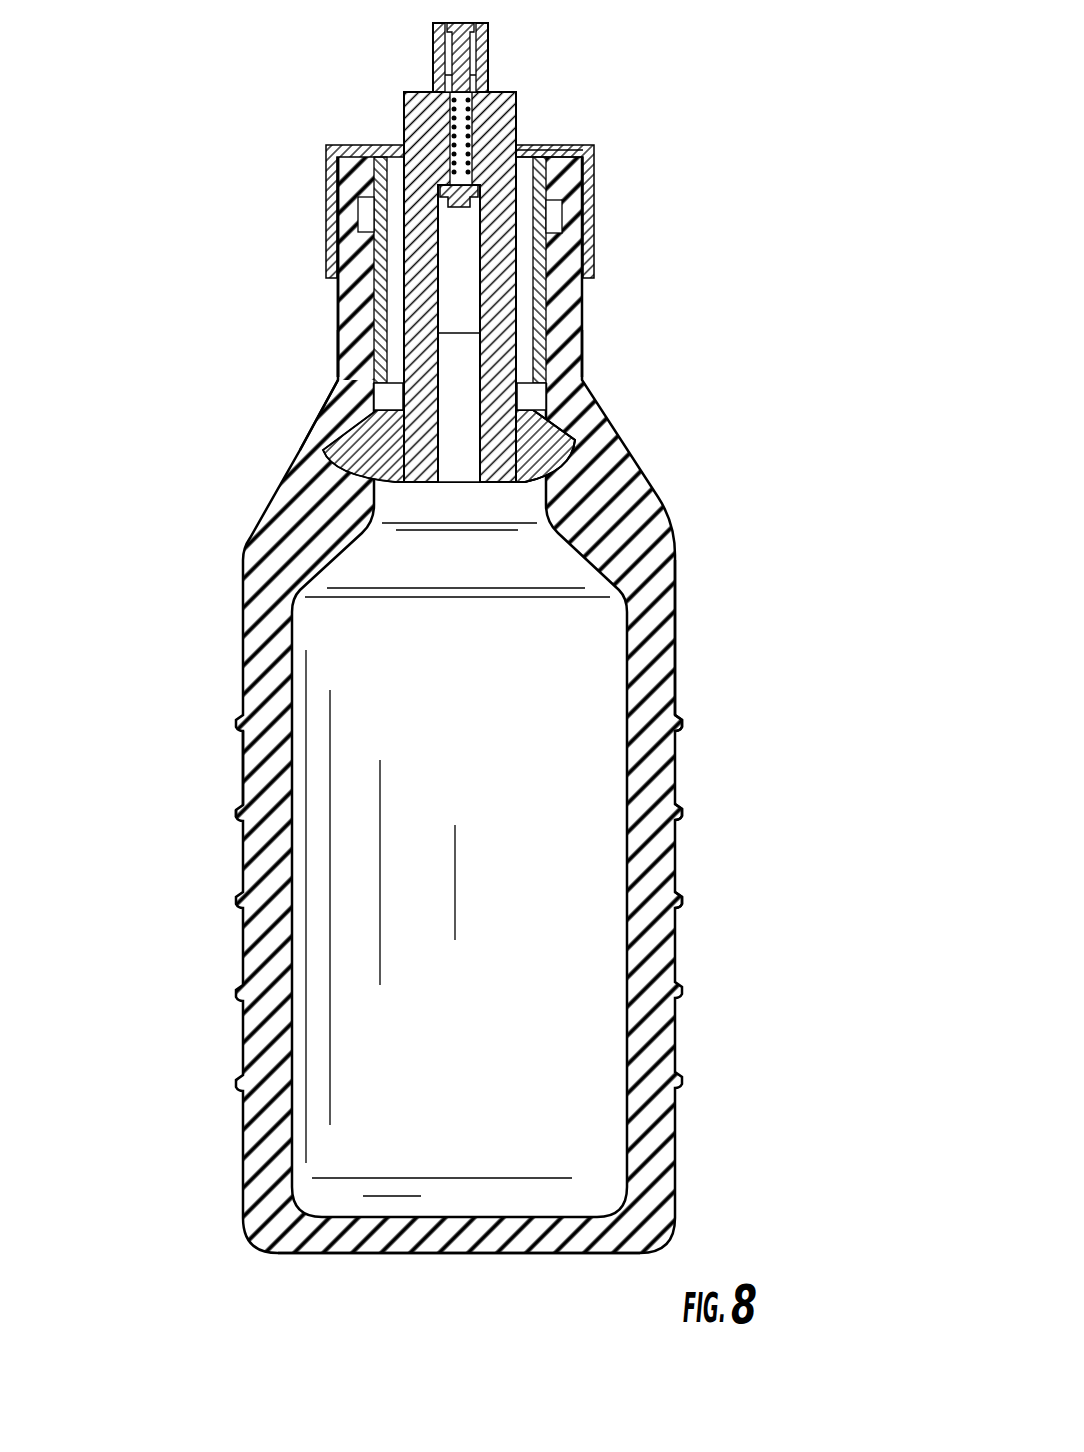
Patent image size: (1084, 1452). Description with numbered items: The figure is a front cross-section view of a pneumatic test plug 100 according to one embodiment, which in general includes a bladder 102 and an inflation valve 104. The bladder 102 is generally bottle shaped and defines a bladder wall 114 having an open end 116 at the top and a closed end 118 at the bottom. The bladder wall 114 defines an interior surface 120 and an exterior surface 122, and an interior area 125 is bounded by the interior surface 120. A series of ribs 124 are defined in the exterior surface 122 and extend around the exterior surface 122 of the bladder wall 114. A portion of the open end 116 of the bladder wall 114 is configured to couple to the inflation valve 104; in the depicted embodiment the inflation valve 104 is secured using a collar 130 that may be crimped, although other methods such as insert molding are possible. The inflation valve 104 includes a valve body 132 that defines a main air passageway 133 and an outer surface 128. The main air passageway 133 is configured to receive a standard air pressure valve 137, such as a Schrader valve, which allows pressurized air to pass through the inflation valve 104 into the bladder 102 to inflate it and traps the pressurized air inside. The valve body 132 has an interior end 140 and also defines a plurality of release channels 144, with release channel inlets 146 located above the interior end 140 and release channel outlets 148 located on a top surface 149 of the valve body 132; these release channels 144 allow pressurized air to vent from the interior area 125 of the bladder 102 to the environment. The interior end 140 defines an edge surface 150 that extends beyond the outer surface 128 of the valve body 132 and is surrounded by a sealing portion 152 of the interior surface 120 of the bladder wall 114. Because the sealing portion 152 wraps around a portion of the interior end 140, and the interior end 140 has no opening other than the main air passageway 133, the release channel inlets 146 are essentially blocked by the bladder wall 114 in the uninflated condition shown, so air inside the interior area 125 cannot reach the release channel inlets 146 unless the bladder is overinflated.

The pneumatic test plug 100 is at (715, 145).
The bladder 102 is at (722, 778).
The inflation valve 104 is at (558, 300).
The bladder wall 114 is at (653, 642).
The open end 116 is at (338, 130).
The closed end 118 is at (405, 1282).
The interior surface 120 is at (293, 636).
The exterior surface 122 is at (242, 785).
The ribs 124 is at (682, 722).
The interior area 125 is at (602, 838).
The outer surface 128 is at (565, 355).
The collar 130 is at (596, 215).
The valve body 132 is at (350, 301).
The main air passageway 133 is at (470, 498).
The standard air pressure valve 137 is at (509, 38).
The interior end 140 is at (570, 455).
The release channels 144 is at (393, 170).
The release channel inlets 146 is at (550, 420).
The release channel outlets 148 is at (525, 157).
The top surface 149 is at (553, 157).
The edge surface 150 is at (360, 435).
The sealing portion 152 is at (585, 478).